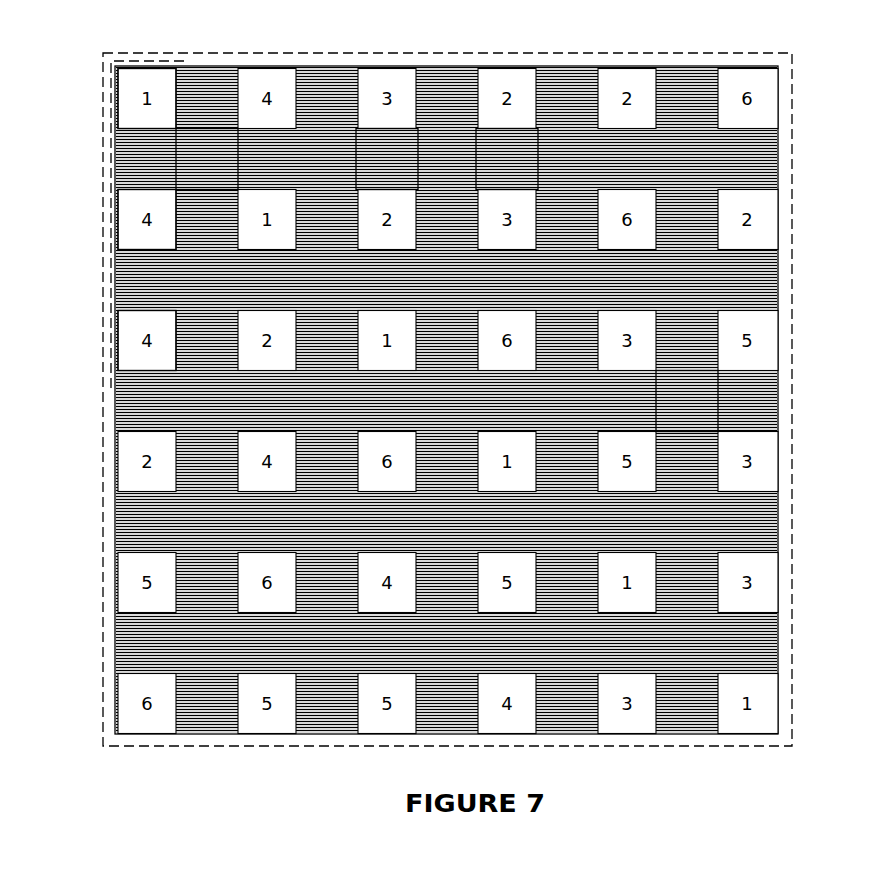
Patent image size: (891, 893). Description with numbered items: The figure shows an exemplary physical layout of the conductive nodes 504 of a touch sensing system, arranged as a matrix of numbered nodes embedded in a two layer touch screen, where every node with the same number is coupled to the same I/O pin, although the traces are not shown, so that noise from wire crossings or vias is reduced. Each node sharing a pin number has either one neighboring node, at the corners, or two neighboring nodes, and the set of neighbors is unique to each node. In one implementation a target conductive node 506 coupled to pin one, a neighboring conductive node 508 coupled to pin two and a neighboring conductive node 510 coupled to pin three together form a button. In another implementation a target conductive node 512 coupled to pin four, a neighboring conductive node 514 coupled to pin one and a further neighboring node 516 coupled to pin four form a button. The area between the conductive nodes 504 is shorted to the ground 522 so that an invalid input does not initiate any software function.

The conductive nodes 504 is at (790, 712).
The target conductive node 506 is at (392, 212).
The neighboring conductive node 508 is at (268, 200).
The neighboring conductive node 510 is at (510, 195).
The target conductive node 512 is at (143, 220).
The neighboring conductive node 514 is at (143, 100).
The sensing cell 516 is at (138, 340).
The ground 522 is at (693, 403).